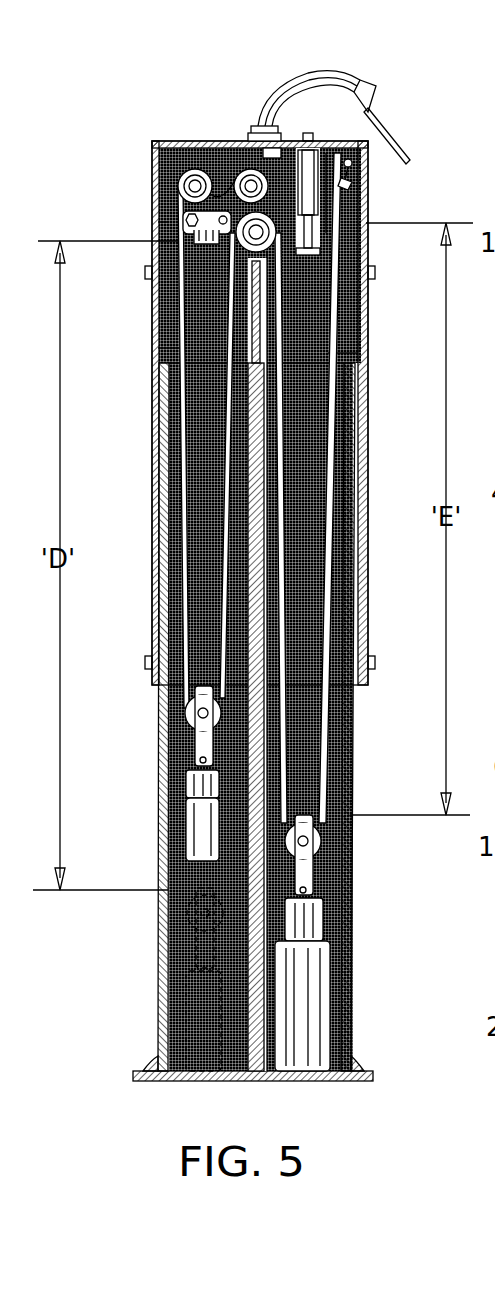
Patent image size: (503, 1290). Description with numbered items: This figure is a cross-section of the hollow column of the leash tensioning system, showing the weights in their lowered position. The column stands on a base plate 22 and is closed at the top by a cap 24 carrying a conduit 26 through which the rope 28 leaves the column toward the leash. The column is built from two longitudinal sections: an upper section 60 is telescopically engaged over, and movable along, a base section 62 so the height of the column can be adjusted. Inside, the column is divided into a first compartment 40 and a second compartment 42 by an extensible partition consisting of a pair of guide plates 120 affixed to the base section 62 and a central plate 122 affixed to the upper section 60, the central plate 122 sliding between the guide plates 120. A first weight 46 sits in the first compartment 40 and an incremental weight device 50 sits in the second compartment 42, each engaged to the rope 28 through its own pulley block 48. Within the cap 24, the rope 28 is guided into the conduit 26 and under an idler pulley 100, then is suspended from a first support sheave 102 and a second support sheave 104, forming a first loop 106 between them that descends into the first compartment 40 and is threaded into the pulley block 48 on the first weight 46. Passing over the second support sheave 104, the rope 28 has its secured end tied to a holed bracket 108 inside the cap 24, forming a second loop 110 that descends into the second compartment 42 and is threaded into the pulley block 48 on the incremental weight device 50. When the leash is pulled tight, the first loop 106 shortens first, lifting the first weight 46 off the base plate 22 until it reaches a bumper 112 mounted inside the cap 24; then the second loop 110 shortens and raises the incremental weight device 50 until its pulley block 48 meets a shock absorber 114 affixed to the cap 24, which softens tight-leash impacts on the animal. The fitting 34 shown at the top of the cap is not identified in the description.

The base plate 22 is at (135, 1063).
The cap 24 is at (362, 238).
The conduit 26 is at (330, 68).
The rope 28 is at (388, 122).
The top fitting 34 is at (245, 118).
The first compartment 40 is at (200, 493).
The second compartment 42 is at (298, 553).
The first weight 46 is at (180, 797).
The pulley block 48 is at (185, 703).
The incremental weight device 50 is at (320, 972).
The upper section 60 is at (150, 452).
The base section 62 is at (160, 982).
The idler pulley 100 is at (232, 162).
The first support sheave 102 is at (172, 165).
The second support sheave 104 is at (178, 205).
The first loop 106 is at (170, 340).
The holed bracket 108 is at (360, 150).
The second loop 110 is at (347, 346).
The bumper 112 is at (195, 238).
The shock absorber 114 is at (313, 186).
The guide plates 120 is at (240, 642).
The central plate 122 is at (245, 322).